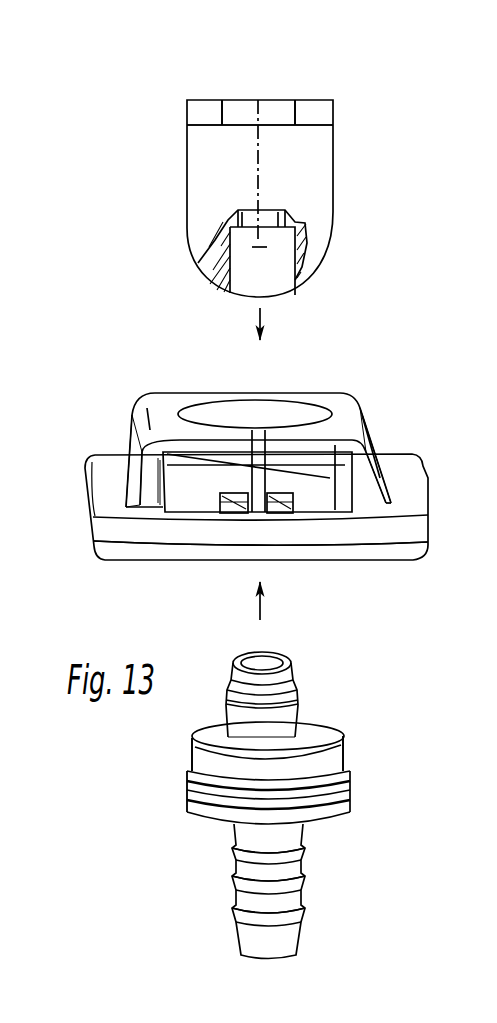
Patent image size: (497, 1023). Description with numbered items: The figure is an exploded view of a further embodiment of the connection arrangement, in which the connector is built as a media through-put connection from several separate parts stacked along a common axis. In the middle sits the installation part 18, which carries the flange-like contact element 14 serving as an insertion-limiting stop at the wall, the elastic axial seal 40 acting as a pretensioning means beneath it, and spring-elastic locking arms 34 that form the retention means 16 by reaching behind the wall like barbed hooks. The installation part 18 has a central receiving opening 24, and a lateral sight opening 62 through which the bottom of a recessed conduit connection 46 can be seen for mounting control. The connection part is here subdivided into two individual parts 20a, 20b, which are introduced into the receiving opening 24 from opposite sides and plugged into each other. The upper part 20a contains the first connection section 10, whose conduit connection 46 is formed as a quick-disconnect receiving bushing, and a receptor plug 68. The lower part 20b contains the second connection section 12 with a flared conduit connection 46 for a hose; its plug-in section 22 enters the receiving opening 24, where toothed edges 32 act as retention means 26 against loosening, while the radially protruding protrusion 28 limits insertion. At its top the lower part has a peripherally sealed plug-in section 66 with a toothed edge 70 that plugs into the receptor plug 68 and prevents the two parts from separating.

The first connection section 10 is at (293, 88).
The second connection section 12 is at (223, 947).
The flange-like contact element 14 is at (378, 553).
The retention means 16 is at (118, 430).
The installation part 18 is at (397, 418).
The individual part of connection part 20a is at (165, 193).
The individual part of connection part 20b is at (163, 803).
The plug-in section 22 is at (340, 760).
The receiving opening 24 is at (255, 418).
The retention means 26 is at (182, 771).
The protrusion 28 is at (343, 808).
The toothed edge 32 is at (352, 787).
The spring-elastic locking arms 34 is at (130, 457).
The elastic axial seal 40 is at (426, 524).
The conduit connection 46 is at (246, 95).
The lateral sight opening 62 is at (283, 506).
The plug-in section 66 is at (287, 712).
The receptor plug 68 is at (247, 273).
The toothed edge 70 is at (302, 697).